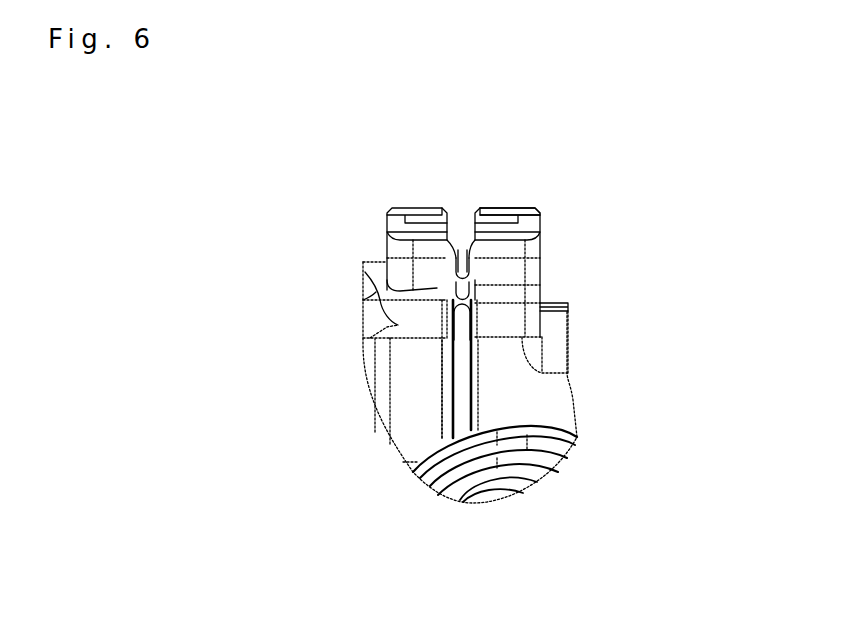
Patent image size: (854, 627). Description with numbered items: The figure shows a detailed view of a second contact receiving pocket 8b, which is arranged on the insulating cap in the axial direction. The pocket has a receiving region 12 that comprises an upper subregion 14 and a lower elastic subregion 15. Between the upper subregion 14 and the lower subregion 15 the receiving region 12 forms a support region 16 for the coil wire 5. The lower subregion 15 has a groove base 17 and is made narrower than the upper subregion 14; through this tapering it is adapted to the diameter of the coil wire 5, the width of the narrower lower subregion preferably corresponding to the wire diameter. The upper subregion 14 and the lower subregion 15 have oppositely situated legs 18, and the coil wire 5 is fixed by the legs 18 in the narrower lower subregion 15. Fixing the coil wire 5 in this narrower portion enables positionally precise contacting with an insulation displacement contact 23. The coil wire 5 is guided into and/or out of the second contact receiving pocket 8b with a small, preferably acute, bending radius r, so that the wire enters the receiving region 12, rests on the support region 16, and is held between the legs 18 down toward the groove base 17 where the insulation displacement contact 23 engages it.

The second contact receiving pocket 8b is at (272, 228).
The receiving region 12 is at (459, 248).
The insulation displacement contact 23 is at (520, 227).
The upper subregion 14 is at (500, 255).
The support region 16 is at (477, 285).
The groove base 17 is at (480, 315).
The coil wire 5 is at (462, 380).
The legs 18 is at (455, 255).
The lower elastic subregion 15 is at (437, 287).
The bending radius r is at (450, 333).